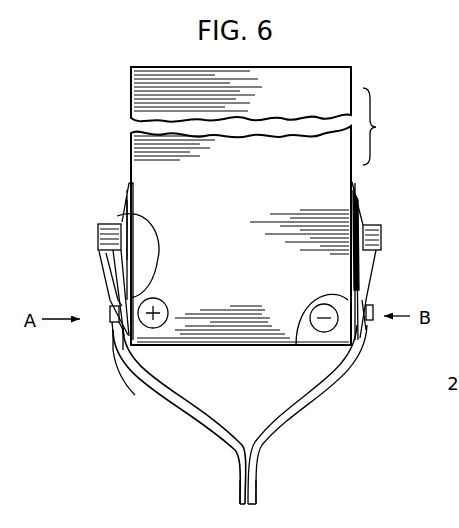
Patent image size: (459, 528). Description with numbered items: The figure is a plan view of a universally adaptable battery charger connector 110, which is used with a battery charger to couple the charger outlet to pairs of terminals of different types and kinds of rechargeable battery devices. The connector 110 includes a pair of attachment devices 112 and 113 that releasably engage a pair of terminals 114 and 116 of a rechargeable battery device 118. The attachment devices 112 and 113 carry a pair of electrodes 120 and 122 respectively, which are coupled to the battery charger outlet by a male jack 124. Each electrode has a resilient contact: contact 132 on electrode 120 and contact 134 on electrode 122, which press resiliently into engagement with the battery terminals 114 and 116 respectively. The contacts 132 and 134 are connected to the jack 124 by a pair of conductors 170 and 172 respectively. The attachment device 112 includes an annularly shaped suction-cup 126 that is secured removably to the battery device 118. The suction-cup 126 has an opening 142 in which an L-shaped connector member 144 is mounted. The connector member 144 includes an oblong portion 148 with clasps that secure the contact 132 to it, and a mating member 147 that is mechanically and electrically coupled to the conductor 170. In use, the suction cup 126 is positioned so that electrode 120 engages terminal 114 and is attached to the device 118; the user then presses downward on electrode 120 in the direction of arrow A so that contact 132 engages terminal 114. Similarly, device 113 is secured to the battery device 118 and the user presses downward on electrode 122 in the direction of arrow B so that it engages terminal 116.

The universally adaptable battery charger connector 110 is at (130, 418).
The attachment device 112 is at (114, 200).
The attachment device 113 is at (365, 182).
The terminal 114 is at (117, 216).
The terminal 116 is at (300, 343).
The rechargeable battery device 118 is at (170, 143).
The electrode 120 is at (99, 304).
The electrode 122 is at (388, 302).
The male jack 124 is at (228, 500).
The suction-cup 126 is at (124, 214).
The contact 132 is at (110, 295).
The contact 134 is at (372, 290).
The opening 142 is at (108, 290).
The L-shaped connector member 144 is at (124, 352).
The mating member 147 is at (108, 333).
The oblong portion 148 is at (110, 316).
The conductor 170 is at (205, 428).
The conductor 172 is at (287, 435).